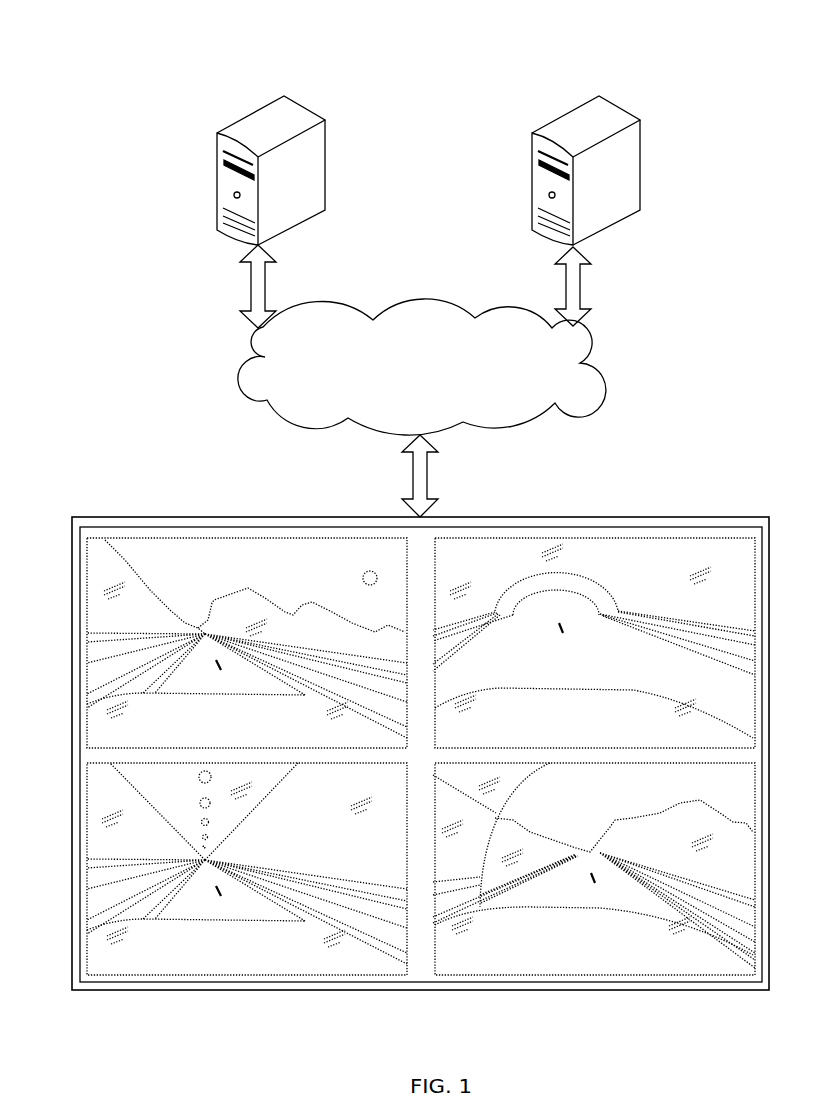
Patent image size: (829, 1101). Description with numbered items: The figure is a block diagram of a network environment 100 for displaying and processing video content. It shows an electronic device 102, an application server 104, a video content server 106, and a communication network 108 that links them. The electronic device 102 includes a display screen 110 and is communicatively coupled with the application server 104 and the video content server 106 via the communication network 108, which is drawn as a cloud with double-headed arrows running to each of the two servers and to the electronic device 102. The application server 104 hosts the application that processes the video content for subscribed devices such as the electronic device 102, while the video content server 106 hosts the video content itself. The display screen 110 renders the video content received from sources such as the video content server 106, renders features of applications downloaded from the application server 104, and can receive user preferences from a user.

The network environment 100 is at (557, 73).
The electronic device 102 is at (672, 517).
The application server 104 is at (218, 133).
The video content server 106 is at (642, 120).
The communication network 108 is at (553, 378).
The display screen 110 is at (112, 527).